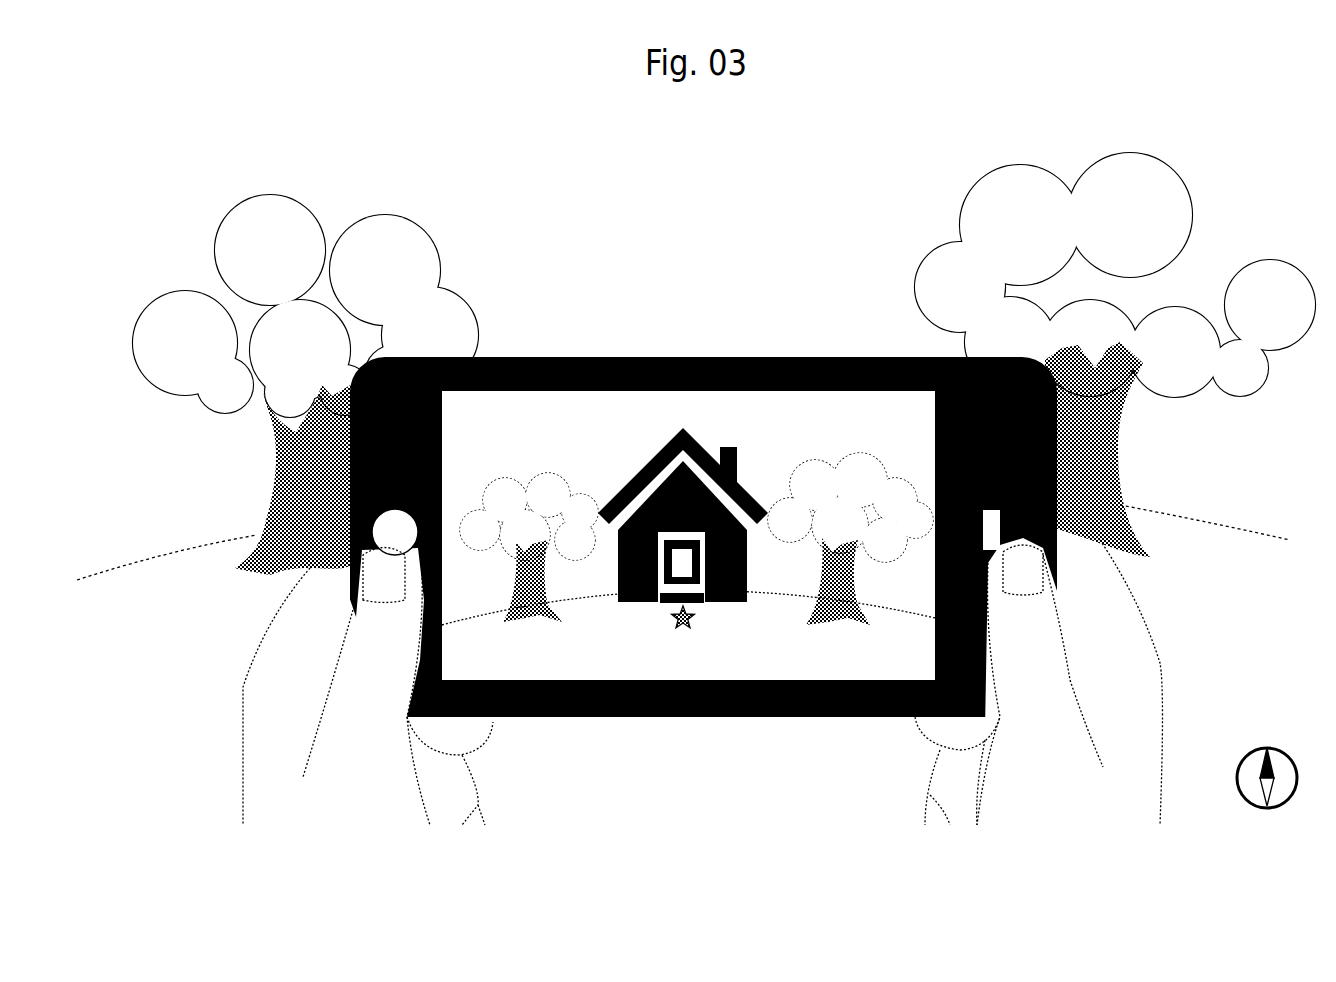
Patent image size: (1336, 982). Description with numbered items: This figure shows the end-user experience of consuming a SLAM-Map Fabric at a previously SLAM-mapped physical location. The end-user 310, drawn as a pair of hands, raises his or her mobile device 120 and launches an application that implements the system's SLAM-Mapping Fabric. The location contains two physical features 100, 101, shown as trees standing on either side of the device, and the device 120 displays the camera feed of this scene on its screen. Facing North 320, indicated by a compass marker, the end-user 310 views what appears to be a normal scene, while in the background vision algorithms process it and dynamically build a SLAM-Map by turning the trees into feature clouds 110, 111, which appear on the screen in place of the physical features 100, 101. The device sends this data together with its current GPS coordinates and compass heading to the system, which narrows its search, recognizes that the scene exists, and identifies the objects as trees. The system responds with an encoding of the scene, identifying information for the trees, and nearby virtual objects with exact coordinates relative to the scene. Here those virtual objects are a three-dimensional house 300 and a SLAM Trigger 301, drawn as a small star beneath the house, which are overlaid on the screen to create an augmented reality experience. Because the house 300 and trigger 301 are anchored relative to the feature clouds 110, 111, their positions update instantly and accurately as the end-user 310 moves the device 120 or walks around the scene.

The physical feature 100 is at (200, 237).
The physical feature 101 is at (1163, 178).
The feature cloud 110 is at (526, 484).
The feature cloud 111 is at (830, 472).
The mobile device 120 is at (630, 720).
The 3-D house 300 is at (688, 430).
The SLAM Trigger 301 is at (690, 625).
The end-user 310 is at (1155, 676).
The North 320 is at (1235, 780).